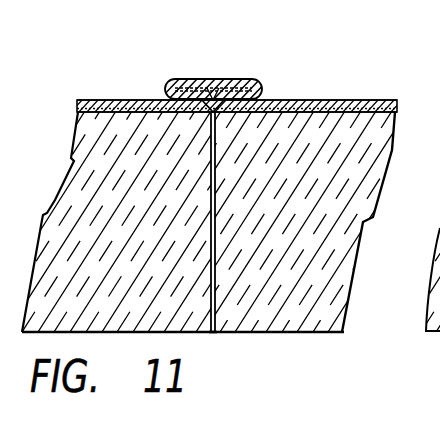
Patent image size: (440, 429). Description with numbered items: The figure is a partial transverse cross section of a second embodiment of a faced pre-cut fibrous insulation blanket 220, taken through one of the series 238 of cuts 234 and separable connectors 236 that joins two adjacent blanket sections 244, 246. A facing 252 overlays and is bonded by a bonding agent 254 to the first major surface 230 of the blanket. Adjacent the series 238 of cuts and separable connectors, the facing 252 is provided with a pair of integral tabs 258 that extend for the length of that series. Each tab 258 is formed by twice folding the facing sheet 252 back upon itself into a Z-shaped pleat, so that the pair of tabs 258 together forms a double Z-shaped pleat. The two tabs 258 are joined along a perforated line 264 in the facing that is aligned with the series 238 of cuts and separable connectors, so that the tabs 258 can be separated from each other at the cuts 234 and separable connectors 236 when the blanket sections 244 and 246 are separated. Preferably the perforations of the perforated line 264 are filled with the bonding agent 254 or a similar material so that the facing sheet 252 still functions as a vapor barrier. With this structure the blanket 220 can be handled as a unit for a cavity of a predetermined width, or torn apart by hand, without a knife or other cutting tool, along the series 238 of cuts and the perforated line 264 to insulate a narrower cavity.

The faced pre-cut fibrous insulation blanket 220 is at (208, 170).
The first major surface 230 is at (102, 100).
The cuts 234 is at (219, 238).
The separable connectors 236 is at (209, 160).
The series of cuts and separable connectors 238 is at (234, 365).
The blanket section 244 is at (320, 215).
The blanket section 246 is at (100, 264).
The facing 252 is at (332, 100).
The bonding agent 254 is at (350, 115).
The tabs 258 is at (183, 79).
The perforated line 264 is at (214, 80).